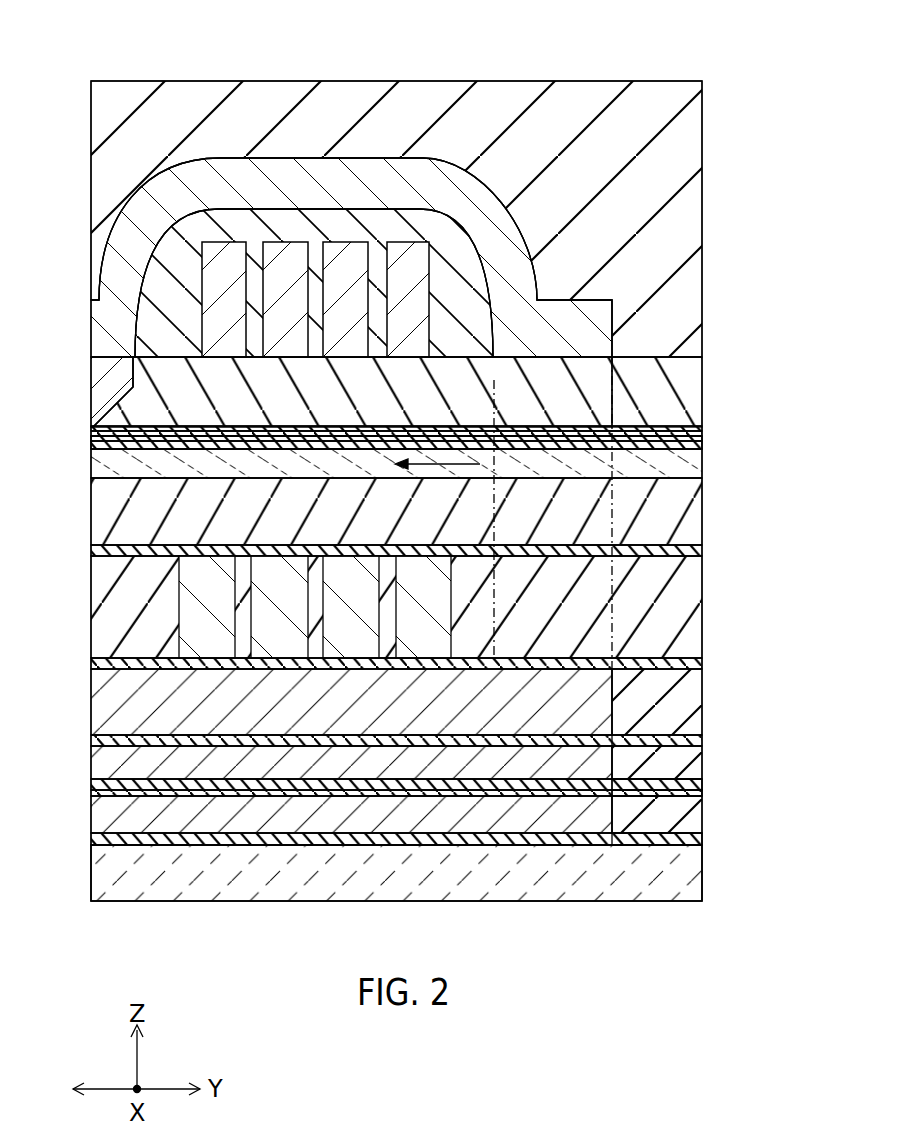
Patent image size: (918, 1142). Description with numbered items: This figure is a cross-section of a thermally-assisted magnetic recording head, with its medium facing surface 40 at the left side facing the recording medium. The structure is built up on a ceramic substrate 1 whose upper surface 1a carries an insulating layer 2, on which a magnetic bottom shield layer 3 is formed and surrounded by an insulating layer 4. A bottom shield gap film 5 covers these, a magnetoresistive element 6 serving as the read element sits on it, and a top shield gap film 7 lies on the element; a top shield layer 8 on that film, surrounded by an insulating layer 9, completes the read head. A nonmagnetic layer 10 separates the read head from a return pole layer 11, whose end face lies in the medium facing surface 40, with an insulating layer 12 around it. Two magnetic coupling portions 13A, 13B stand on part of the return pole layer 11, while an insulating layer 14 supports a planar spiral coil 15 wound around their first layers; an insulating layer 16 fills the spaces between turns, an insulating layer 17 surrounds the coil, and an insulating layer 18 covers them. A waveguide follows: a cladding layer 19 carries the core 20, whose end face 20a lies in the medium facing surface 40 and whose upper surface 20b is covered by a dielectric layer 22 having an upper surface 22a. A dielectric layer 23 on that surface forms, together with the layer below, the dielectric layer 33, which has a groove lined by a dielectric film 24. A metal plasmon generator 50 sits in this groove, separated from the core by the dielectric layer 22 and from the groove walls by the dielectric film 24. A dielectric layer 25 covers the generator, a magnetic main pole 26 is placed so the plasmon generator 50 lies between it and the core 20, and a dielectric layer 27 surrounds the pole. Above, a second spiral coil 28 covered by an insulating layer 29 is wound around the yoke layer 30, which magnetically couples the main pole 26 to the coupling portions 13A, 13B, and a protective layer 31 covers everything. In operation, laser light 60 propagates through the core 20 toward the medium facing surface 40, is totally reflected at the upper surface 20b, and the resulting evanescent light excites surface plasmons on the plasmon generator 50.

The substrate 1 is at (120, 901).
The upper surface 1a is at (91, 828).
The insulating layer 2 is at (703, 840).
The bottom shield layer 3 is at (91, 810).
The insulating layer 4 is at (703, 817).
The bottom shield gap film 5 is at (703, 793).
The magnetoresistive element 6 is at (91, 785).
The top shield gap film 7 is at (703, 783).
The top shield layer 8 is at (91, 765).
The insulating layer 9 is at (703, 762).
The nonmagnetic layer 10 is at (703, 742).
The return pole layer 11 is at (91, 708).
The insulating layer 12 is at (703, 690).
The coupling portion 13A is at (613, 587).
The coupling portion 13B is at (703, 567).
The insulating layer 14 is at (703, 665).
The coil 15 is at (177, 607).
The insulating layer 16 is at (397, 603).
The insulating layer 17 is at (409, 607).
The insulating layer 18 is at (703, 552).
The cladding layer 19 is at (703, 503).
The core 20 is at (360, 253).
The end face 20a is at (91, 465).
The upper surface 20b is at (134, 440).
The dielectric layer 22 is at (703, 445).
The upper surface 22a is at (100, 293).
The dielectric layer 23 is at (703, 436).
The dielectric film 24 is at (91, 410).
The dielectric layer 25 is at (703, 428).
The main pole 26 is at (91, 375).
The dielectric layer 27 is at (703, 392).
The coil 28 is at (275, 242).
The insulating layer 29 is at (330, 225).
The yoke layer 30 is at (385, 180).
The protective layer 31 is at (447, 81).
The dielectric layer 33 is at (469, 452).
The medium facing surface 40 is at (88, 868).
The plasmon generator 50 is at (92, 440).
The laser light 60 is at (494, 380).